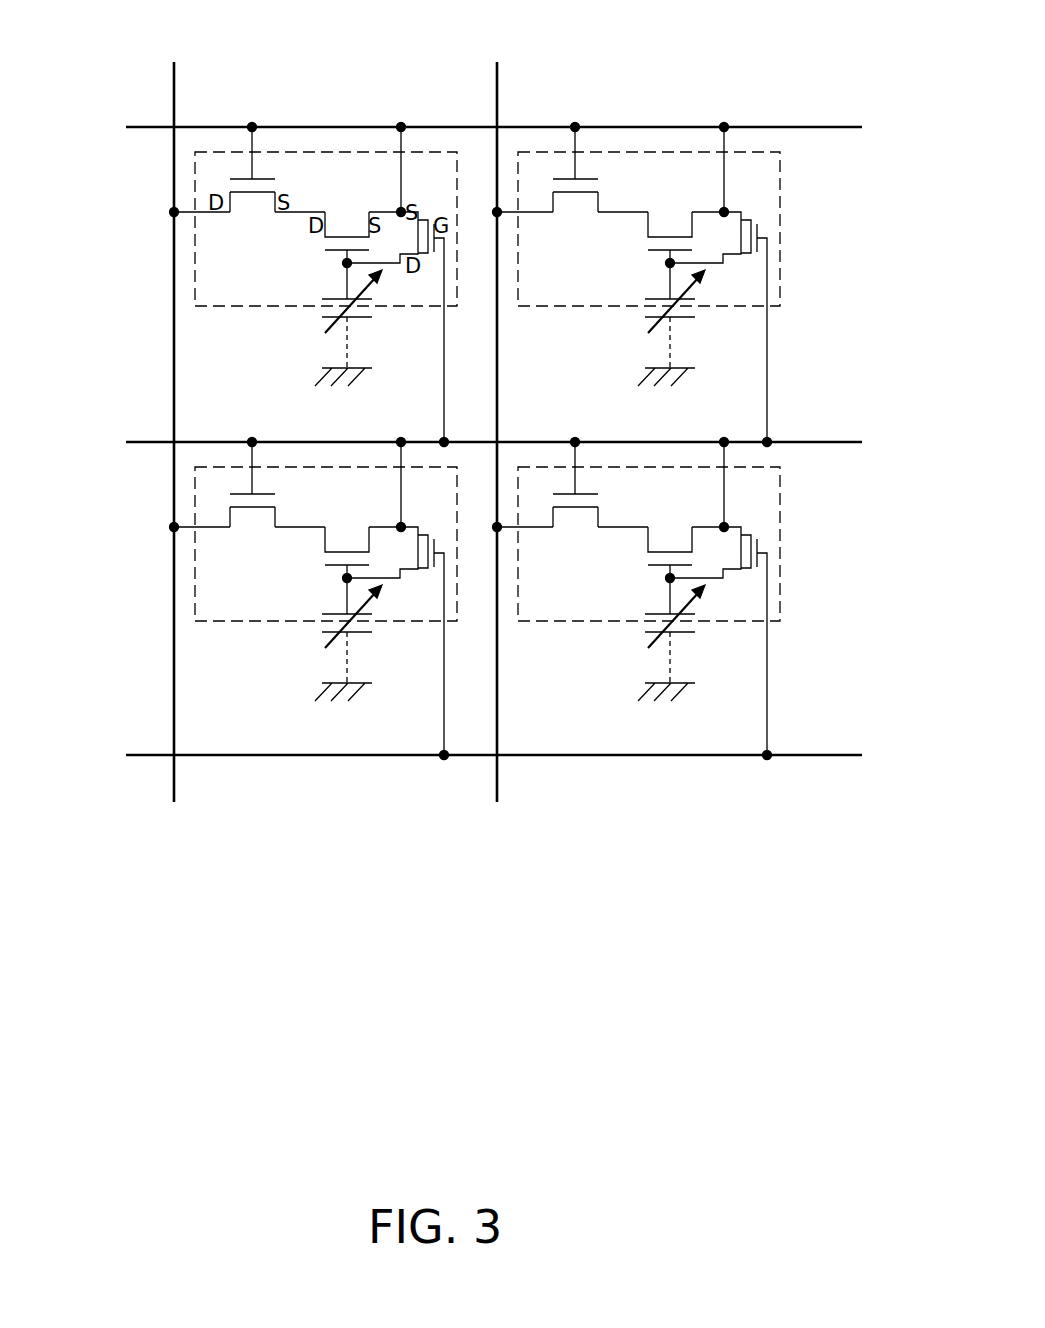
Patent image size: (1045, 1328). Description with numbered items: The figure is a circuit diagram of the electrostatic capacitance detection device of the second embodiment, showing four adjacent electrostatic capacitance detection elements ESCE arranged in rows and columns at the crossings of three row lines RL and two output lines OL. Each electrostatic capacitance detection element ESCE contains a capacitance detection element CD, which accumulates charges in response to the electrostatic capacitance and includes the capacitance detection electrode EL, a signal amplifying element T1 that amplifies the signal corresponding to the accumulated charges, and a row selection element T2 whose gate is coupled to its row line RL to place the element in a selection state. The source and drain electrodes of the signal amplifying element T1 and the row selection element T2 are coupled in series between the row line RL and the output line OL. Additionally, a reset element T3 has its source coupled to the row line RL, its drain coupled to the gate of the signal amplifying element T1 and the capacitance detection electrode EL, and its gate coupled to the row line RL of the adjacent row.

The row line RL is at (450, 429).
The output line OL is at (346, 405).
The signal amplifying element T1 is at (348, 223).
The row selection element T2 is at (247, 203).
The reset element T3 is at (428, 210).
The capacitance detection element CD is at (334, 292).
The capacitance detection electrode EL is at (528, 459).
The electrostatic capacitance detection element ESCE is at (571, 645).